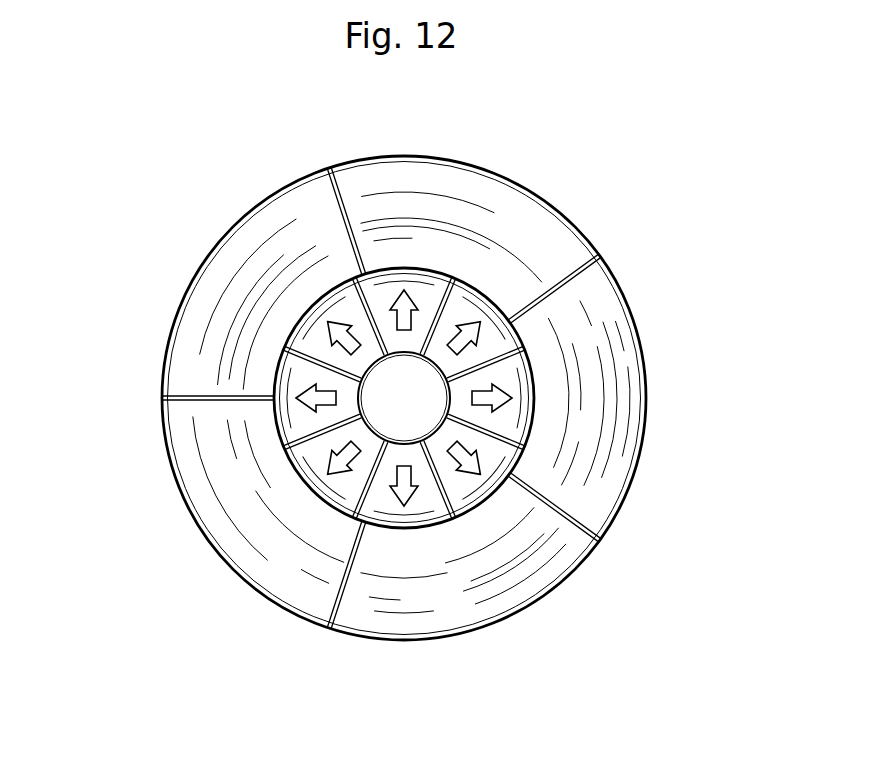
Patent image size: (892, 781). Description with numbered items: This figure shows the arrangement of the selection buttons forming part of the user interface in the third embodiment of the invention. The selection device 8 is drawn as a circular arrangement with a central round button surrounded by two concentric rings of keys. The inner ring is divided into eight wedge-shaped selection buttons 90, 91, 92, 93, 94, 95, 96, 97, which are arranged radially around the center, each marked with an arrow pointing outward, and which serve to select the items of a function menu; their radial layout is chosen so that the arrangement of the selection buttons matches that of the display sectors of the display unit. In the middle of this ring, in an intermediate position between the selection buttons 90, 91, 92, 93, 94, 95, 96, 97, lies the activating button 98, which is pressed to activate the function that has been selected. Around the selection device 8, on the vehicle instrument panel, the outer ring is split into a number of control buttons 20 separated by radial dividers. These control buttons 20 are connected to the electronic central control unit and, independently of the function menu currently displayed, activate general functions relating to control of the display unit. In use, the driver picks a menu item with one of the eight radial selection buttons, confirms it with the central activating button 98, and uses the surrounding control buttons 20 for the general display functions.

The selection device 8 is at (402, 397).
The control buttons 20 is at (378, 177).
The selection button 90 is at (423, 293).
The selection button 91 is at (493, 340).
The selection button 92 is at (510, 418).
The selection button 93 is at (497, 450).
The selection button 94 is at (384, 503).
The selection button 95 is at (317, 458).
The selection button 96 is at (297, 383).
The selection button 97 is at (342, 308).
The activating button 98 is at (417, 387).